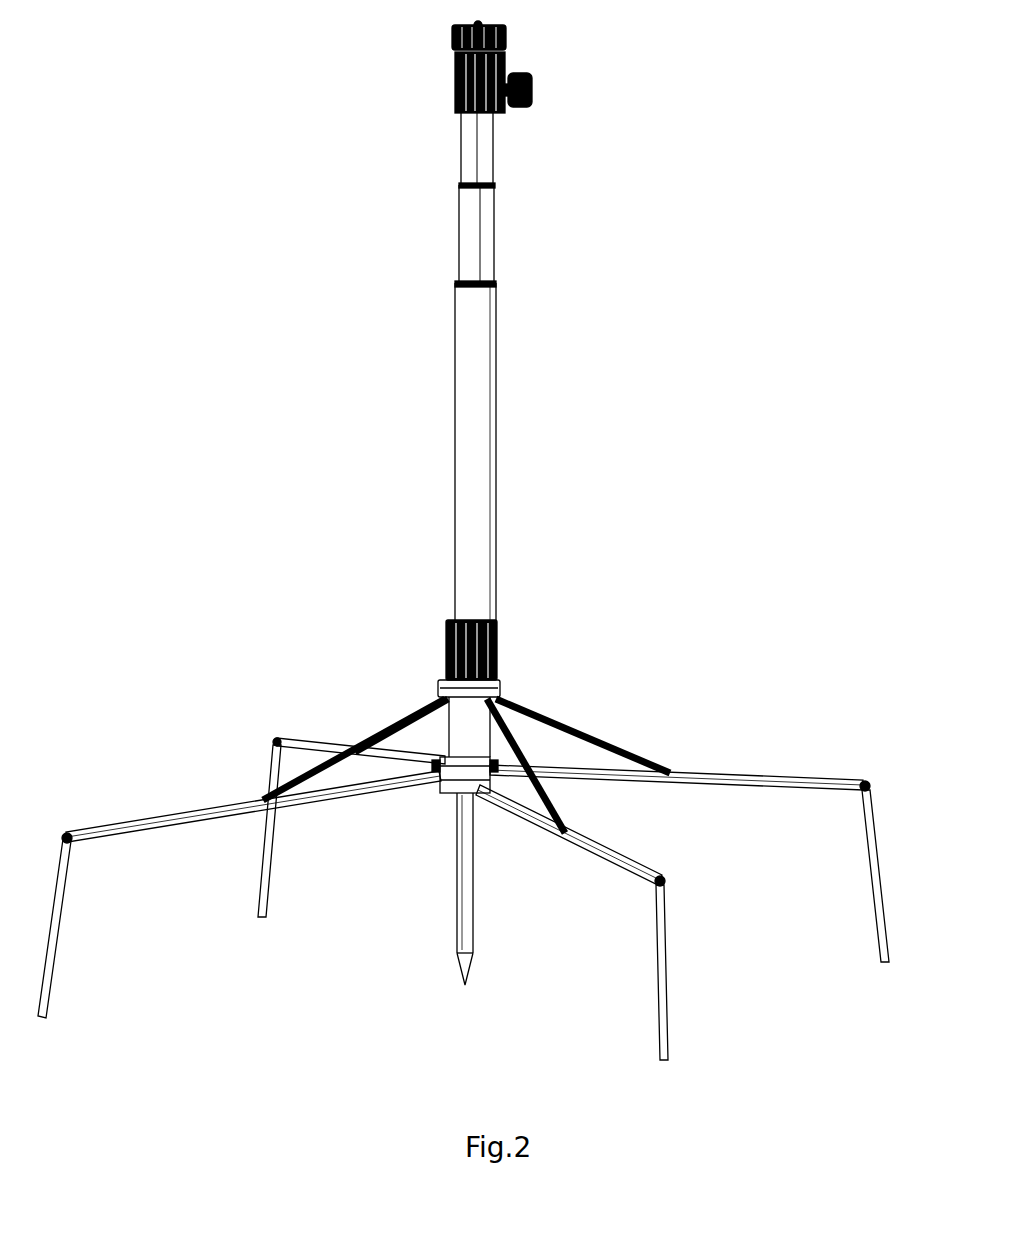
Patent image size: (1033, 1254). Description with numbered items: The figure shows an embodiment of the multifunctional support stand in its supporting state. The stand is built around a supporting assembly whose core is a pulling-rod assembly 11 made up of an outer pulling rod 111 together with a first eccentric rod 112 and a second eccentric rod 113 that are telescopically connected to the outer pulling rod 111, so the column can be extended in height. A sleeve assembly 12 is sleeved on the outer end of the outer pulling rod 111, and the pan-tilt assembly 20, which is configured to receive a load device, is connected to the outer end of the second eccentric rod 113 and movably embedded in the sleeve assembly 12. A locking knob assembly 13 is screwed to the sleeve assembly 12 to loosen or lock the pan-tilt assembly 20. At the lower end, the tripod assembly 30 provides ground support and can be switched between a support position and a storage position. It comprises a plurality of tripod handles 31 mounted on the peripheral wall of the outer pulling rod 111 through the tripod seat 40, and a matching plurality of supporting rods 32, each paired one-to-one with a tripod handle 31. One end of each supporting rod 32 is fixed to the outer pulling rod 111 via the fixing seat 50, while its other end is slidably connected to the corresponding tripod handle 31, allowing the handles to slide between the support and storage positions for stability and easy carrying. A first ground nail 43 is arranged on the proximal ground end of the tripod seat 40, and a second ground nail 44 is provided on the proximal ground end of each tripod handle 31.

The pulling-rod assembly 11 is at (540, 367).
The outer pulling rod 111 is at (508, 452).
The first eccentric rod 112 is at (489, 250).
The second eccentric rod 113 is at (489, 160).
The sleeve assembly 12 is at (456, 78).
The locking knob assembly 13 is at (532, 76).
The pan-tilt assembly 20 is at (503, 33).
The tripod assembly 30 is at (464, 778).
The tripod handle 31 is at (690, 770).
The supporting rod 32 is at (627, 750).
The tripod seat 40 is at (447, 785).
The first ground nail 43 is at (470, 925).
The second ground nail 44 is at (880, 860).
The fixing seat 50 is at (499, 642).